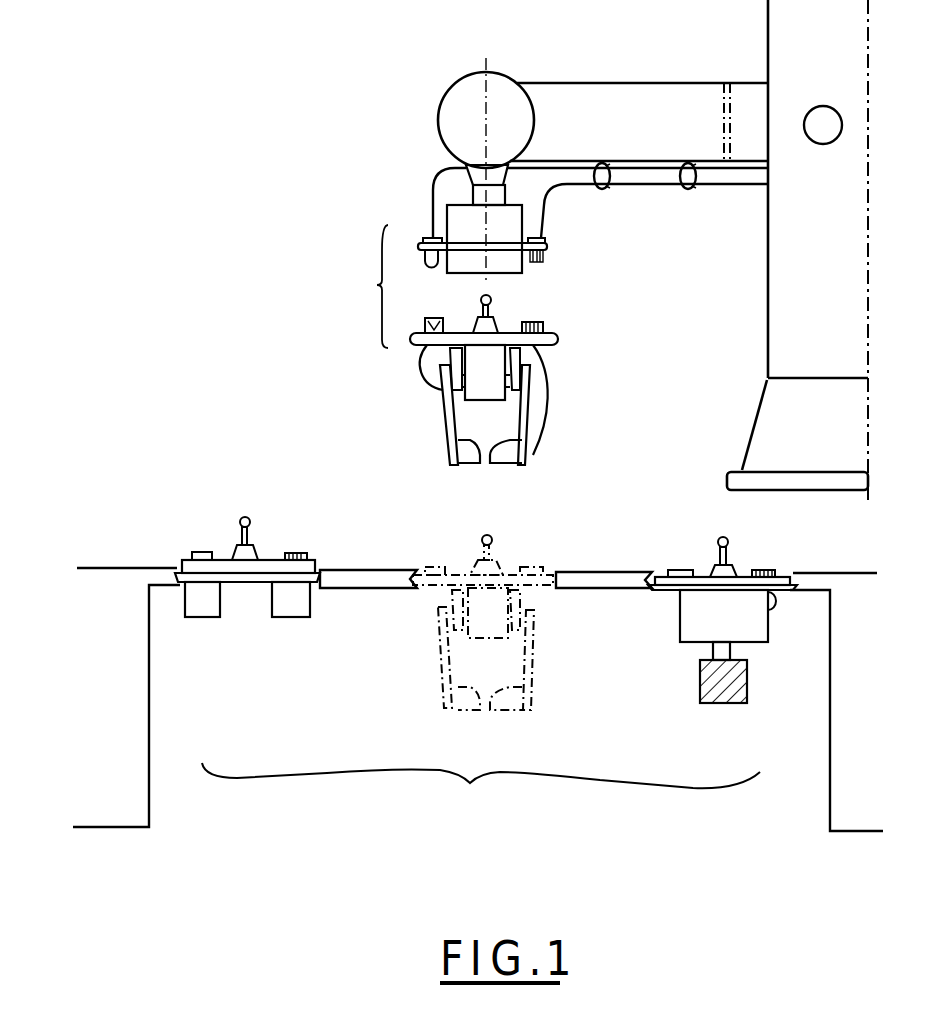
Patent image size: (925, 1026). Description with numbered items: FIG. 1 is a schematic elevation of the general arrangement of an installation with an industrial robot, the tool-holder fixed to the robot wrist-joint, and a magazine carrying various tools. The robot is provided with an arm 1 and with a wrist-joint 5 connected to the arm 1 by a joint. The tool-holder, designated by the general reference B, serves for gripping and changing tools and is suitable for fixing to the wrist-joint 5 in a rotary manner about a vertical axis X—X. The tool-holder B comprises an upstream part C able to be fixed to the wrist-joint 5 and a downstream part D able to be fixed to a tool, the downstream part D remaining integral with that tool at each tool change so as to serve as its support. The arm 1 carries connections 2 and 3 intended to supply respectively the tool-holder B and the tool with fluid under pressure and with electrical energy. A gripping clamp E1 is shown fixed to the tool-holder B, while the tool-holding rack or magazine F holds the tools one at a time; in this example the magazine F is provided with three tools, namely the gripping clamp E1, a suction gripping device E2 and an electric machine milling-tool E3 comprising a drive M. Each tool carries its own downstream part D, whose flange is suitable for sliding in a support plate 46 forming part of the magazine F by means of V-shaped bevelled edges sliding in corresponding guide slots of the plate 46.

The arm 1 is at (633, 96).
The connection 2 is at (562, 167).
The connection 3 is at (639, 187).
The wrist-joint 5 is at (498, 196).
The support plate 46 is at (347, 578).
The vertical axis X is at (494, 159).
The tool-holder B is at (362, 286).
The upstream part C is at (568, 252).
The downstream part D is at (571, 338).
The gripping clamp E1 is at (413, 717).
The suction gripping device E2 is at (248, 624).
The electric machine milling-tool E3 is at (700, 652).
The drive M is at (724, 616).
The tool-holding rack or magazine F is at (481, 794).